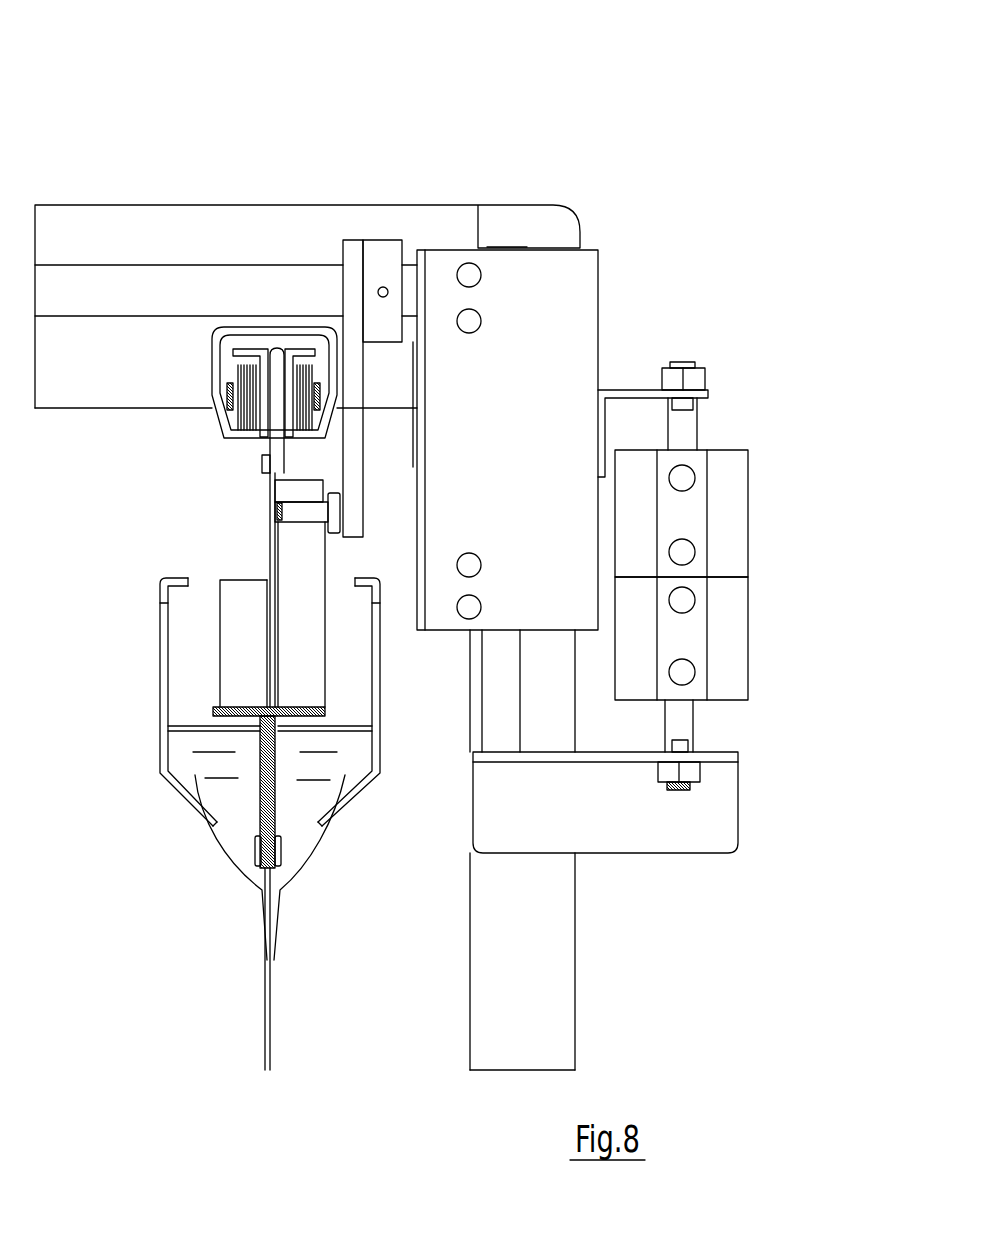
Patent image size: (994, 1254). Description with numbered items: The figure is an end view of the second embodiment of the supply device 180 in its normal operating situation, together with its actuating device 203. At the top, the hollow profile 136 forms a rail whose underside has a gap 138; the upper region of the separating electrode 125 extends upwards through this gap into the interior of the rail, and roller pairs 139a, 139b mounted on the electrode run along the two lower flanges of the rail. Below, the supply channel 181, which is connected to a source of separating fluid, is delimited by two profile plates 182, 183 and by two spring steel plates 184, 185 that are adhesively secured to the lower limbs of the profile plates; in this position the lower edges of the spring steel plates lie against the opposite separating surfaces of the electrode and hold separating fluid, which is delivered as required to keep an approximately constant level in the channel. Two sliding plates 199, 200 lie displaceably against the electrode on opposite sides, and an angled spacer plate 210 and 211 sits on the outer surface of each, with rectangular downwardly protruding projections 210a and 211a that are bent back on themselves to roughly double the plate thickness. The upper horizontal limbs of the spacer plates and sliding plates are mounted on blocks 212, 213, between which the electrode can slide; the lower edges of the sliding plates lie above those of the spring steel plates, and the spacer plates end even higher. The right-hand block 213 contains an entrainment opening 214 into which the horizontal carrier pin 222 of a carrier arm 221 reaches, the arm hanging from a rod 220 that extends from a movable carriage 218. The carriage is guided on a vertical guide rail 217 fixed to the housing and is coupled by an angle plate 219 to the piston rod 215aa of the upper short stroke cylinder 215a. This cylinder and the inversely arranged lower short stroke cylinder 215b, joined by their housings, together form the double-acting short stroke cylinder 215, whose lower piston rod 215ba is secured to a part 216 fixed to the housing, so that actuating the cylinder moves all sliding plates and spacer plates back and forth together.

The supply device 180 is at (519, 154).
The rod 220 is at (122, 288).
The hollow profile 136 is at (309, 325).
The roller pair 139a is at (242, 413).
The roller pair 139b is at (310, 400).
The gap 138 is at (267, 453).
The carrier pin 222 is at (302, 510).
The entrainment opening 214 is at (270, 513).
The carrier arm 221 is at (355, 467).
The carriage 218 is at (523, 481).
The actuating device 203 is at (621, 316).
The angle plate 219 is at (638, 392).
The piston rod 215aa is at (675, 426).
The upper short stroke cylinder 215a is at (713, 482).
The double-acting short stroke cylinder 215 is at (734, 558).
The lower short stroke cylinder 215b is at (717, 637).
The guide rail 217 is at (555, 702).
The piston rod 215ba is at (687, 733).
The part 216 is at (658, 812).
The block 212 is at (235, 648).
The block 213 is at (303, 643).
The profile plate 182 is at (165, 658).
The profile plate 183 is at (377, 690).
The angled spacer plate 210 is at (235, 752).
The angled spacer plate 211 is at (290, 755).
The supply channel 181 is at (247, 718).
The projection 210a is at (255, 850).
The projection 211a is at (285, 852).
The sliding plate 200 is at (275, 878).
The spring steel plate 184 is at (262, 890).
The spring steel plate 185 is at (284, 880).
The sliding plate 199 is at (244, 893).
The separating electrode 125 is at (266, 1000).